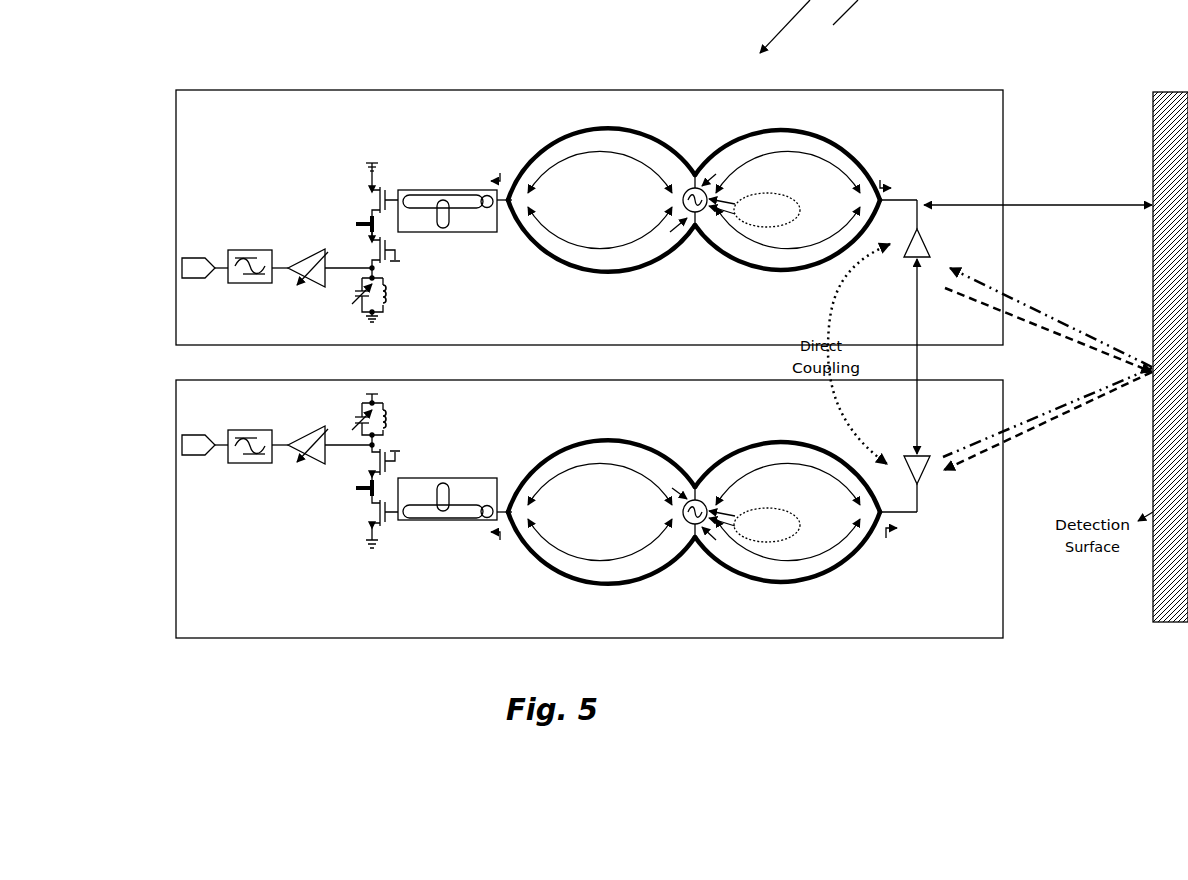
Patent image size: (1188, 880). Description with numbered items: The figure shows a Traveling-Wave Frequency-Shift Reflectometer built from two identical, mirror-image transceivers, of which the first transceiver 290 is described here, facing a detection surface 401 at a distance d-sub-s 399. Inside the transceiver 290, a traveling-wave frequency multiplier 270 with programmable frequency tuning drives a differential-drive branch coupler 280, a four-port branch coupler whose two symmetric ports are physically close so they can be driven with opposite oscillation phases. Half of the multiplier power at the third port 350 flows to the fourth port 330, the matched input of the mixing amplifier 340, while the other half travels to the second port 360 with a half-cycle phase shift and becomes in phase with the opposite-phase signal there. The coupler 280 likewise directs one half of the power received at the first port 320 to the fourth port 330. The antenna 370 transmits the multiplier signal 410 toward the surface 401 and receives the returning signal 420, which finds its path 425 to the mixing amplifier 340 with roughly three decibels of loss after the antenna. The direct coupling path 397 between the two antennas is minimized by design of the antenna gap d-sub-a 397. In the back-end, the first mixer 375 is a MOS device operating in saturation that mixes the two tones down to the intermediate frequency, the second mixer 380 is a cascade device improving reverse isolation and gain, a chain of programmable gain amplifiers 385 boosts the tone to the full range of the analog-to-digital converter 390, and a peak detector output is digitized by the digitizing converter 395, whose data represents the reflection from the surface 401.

The transceiver 290 is at (589, 214).
The Differential-Drive Branch Coupler 280 is at (694, 192).
The Traveling-Wave Frequency Multiplier 270 is at (741, 207).
The port P3 350 is at (730, 148).
The port P2 360 is at (727, 255).
The port P1 320 is at (902, 203).
The path 425 is at (919, 212).
The antenna 370 is at (903, 265).
The port P4 330 is at (507, 238).
The mixing amplifier 340 is at (422, 189).
The mixer M1 375 is at (375, 186).
The mixer M2 380 is at (387, 263).
The Programmable Gain Amplifier 385 is at (313, 283).
The Analog Digital Converter 390 is at (263, 283).
The ADC 395 is at (207, 277).
The distance d_s 399 is at (1038, 193).
The direct coupling path / antenna gap d_a 397 is at (950, 356).
The detection surface 401 is at (1170, 92).
The TWFM signal 410 is at (1013, 297).
The returning signal 420 is at (1057, 327).